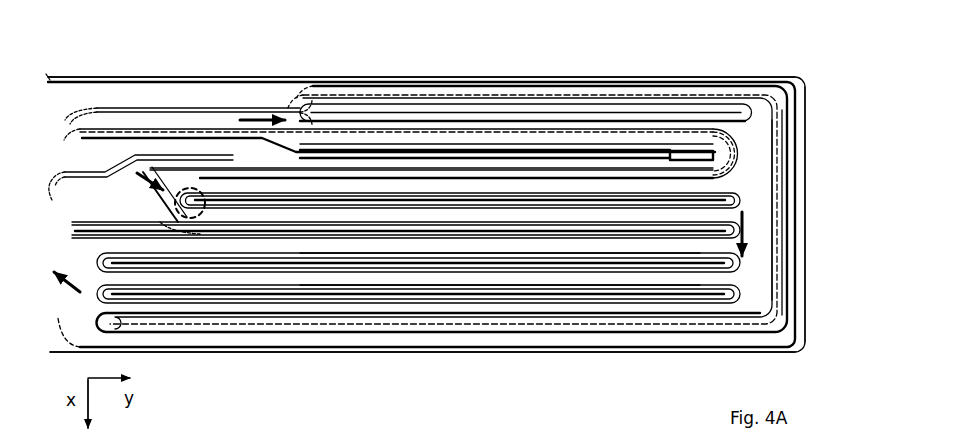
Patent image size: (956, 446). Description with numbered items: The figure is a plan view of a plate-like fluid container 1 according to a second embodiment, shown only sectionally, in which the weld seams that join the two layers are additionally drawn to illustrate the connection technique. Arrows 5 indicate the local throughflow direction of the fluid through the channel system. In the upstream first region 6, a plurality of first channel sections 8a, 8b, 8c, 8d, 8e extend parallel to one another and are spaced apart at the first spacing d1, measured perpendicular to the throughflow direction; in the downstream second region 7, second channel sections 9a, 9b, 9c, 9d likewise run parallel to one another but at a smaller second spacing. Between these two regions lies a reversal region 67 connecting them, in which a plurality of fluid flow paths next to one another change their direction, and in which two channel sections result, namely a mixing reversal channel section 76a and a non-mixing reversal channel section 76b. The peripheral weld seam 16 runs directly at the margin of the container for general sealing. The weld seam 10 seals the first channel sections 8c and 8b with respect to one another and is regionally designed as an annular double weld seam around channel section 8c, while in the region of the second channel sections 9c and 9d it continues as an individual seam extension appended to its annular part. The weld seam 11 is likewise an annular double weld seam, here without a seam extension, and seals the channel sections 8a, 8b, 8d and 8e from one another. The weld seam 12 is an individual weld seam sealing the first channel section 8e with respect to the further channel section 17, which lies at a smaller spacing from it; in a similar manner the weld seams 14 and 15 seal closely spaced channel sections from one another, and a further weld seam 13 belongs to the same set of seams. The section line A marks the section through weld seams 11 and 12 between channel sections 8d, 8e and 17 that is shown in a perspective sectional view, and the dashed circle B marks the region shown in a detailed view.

The plate-like fluid container 1 is at (612, 68).
The arrows 5 is at (267, 114).
The first region 6 is at (490, 58).
The second region 7 is at (568, 362).
The first channel section 8a is at (212, 122).
The first channel section 8b is at (108, 166).
The first channel section 8c is at (410, 84).
The first channel section 8d is at (483, 136).
The first channel section 8e is at (497, 184).
The second channel section 9a is at (370, 250).
The second channel section 9b is at (258, 282).
The second channel section 9c is at (238, 308).
The second channel section 9d is at (240, 341).
The weld seam 10 is at (710, 105).
The weld seam 11 is at (625, 153).
The weld seam 12 is at (736, 203).
The weld seam 13 is at (65, 178).
The weld seam 14 is at (103, 263).
The weld seam 15 is at (107, 295).
The peripheral weld seam 16 is at (195, 355).
The further channel section 17 is at (608, 216).
The reversal region 67 is at (808, 177).
The mixing reversal channel section 76a is at (768, 186).
The non-mixing reversal channel section 76b is at (750, 220).
The section A- A is at (560, 139).
The detail B is at (186, 186).
The first spacing d1 is at (372, 170).